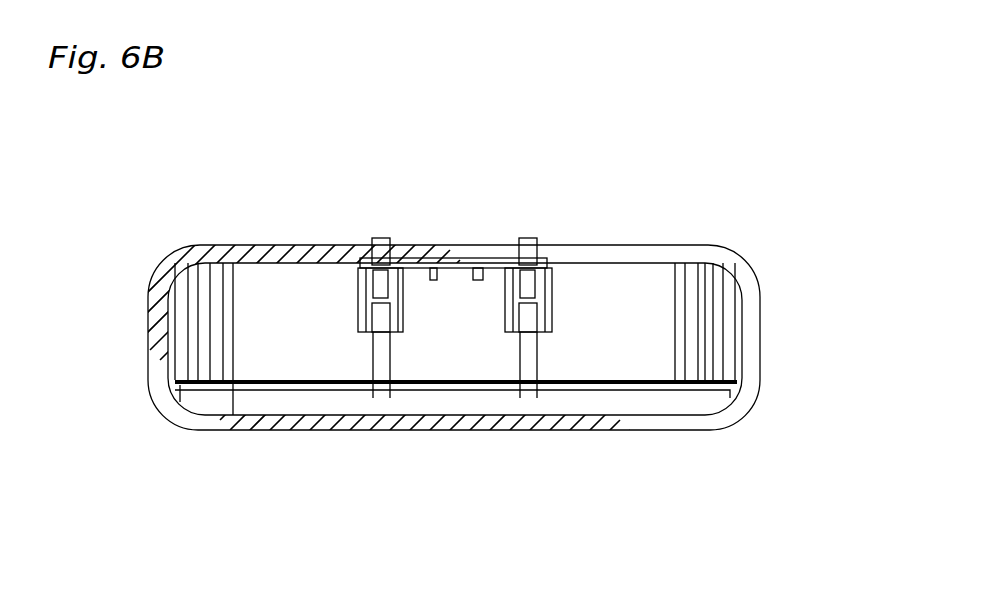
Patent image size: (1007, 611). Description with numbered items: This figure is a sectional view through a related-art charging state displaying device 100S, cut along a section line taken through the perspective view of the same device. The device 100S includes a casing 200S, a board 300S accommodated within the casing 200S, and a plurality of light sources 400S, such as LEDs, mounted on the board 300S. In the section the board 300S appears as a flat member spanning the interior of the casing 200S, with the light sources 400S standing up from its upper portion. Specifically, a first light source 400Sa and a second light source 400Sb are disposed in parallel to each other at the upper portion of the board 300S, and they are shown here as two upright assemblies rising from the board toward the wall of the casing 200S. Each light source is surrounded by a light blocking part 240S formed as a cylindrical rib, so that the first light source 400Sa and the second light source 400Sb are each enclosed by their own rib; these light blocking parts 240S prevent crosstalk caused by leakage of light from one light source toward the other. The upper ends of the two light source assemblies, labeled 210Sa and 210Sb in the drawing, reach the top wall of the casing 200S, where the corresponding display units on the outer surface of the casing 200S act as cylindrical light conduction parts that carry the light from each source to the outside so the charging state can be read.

The charging state displaying device 100S is at (242, 292).
The casing 200S is at (700, 247).
The first cylinder head 210Sa is at (518, 262).
The second cylinder head 210Sb is at (375, 272).
The light blocking part 240S is at (507, 297).
The board 300S is at (637, 383).
The light sources 400S is at (449, 361).
The first light source 400Sa is at (575, 325).
The second light source 400Sb is at (328, 325).